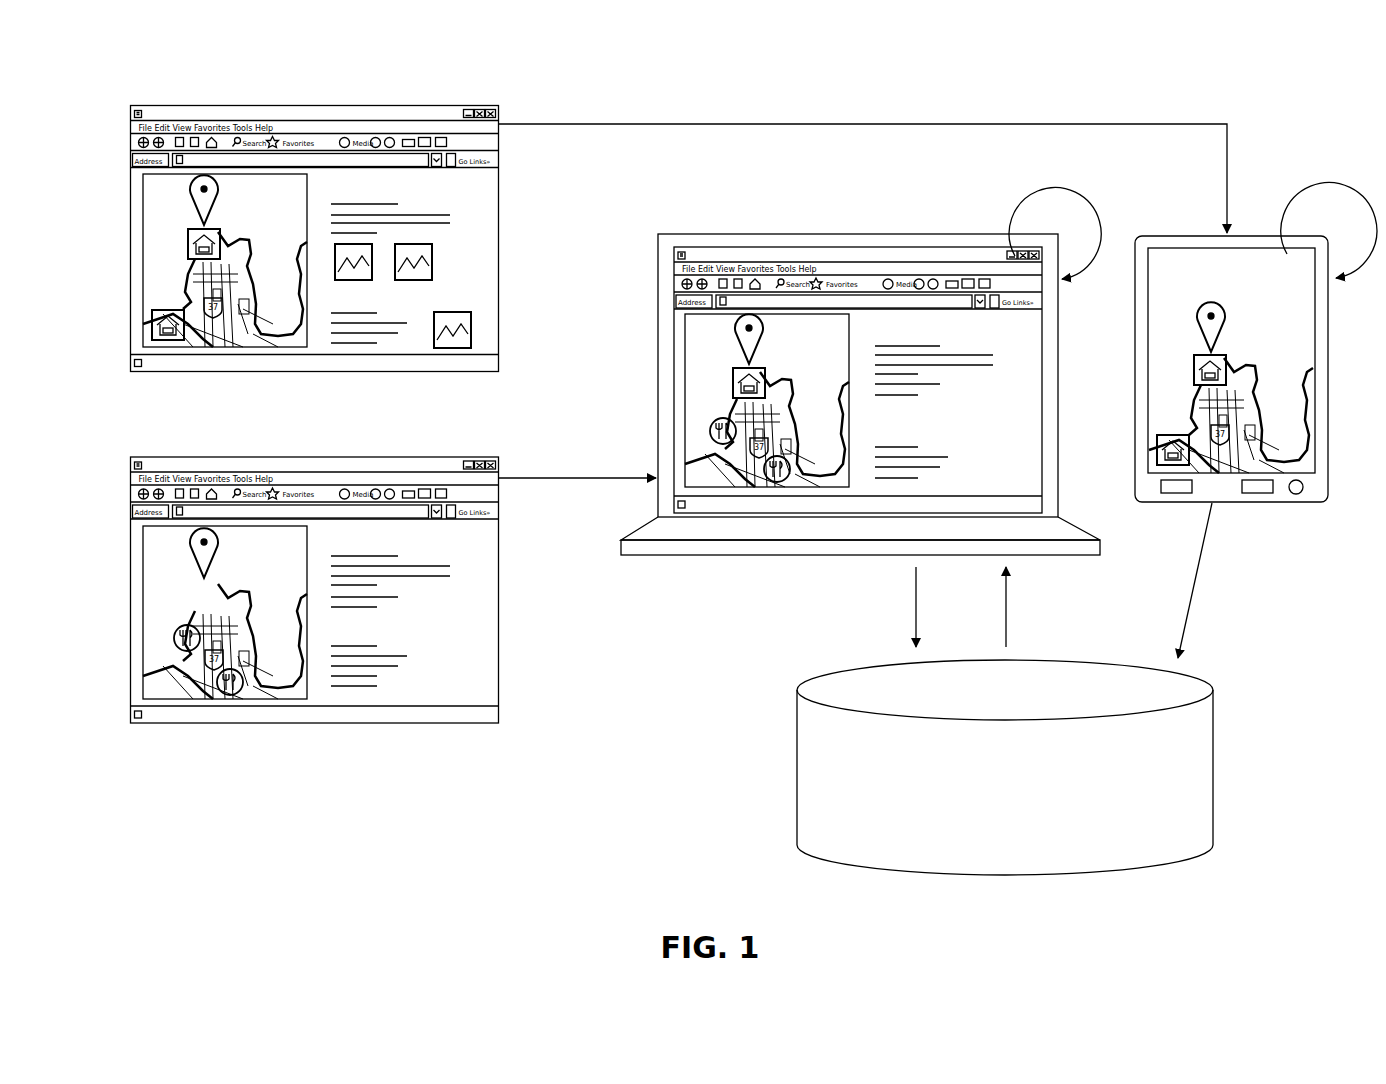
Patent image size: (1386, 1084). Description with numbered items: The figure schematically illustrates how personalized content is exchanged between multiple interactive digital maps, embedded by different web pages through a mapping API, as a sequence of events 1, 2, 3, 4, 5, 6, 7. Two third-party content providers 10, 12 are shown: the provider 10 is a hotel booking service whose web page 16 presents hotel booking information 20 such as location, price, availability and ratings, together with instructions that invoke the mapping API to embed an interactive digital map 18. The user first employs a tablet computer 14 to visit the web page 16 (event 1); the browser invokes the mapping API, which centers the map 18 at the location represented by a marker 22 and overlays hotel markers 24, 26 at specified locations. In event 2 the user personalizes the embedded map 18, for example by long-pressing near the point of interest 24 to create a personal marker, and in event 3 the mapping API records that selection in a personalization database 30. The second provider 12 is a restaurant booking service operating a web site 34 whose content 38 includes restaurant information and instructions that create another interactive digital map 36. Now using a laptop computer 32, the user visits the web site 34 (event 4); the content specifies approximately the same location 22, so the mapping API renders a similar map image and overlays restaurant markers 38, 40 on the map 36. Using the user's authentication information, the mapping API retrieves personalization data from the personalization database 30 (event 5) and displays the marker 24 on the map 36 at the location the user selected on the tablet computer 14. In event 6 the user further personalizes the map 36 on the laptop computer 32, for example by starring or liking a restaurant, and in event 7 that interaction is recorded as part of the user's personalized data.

The event 1 is at (970, 124).
The event 2 is at (1343, 188).
The event 3 is at (1188, 608).
The event 4 is at (540, 478).
The event 5 is at (1008, 608).
The event 6 is at (1076, 194).
The event 7 is at (917, 608).
The third-party content provider 10 is at (150, 74).
The third-party content provider 12 is at (150, 435).
The tablet computer 14 is at (1329, 323).
The web page 16 is at (385, 105).
The interactive digital map 18 is at (142, 198).
The hotel booking information 20 is at (460, 233).
The marker 22 is at (735, 324).
The hotel marker 24 is at (731, 375).
The hotel marker 26 is at (1158, 438).
The personalization database 30 is at (818, 673).
The laptop computer 32 is at (884, 234).
The web site 34 is at (499, 610).
The interactive digital map 36 is at (142, 575).
The restaurant marker 38 is at (413, 645).
The restaurant marker 40 is at (700, 468).